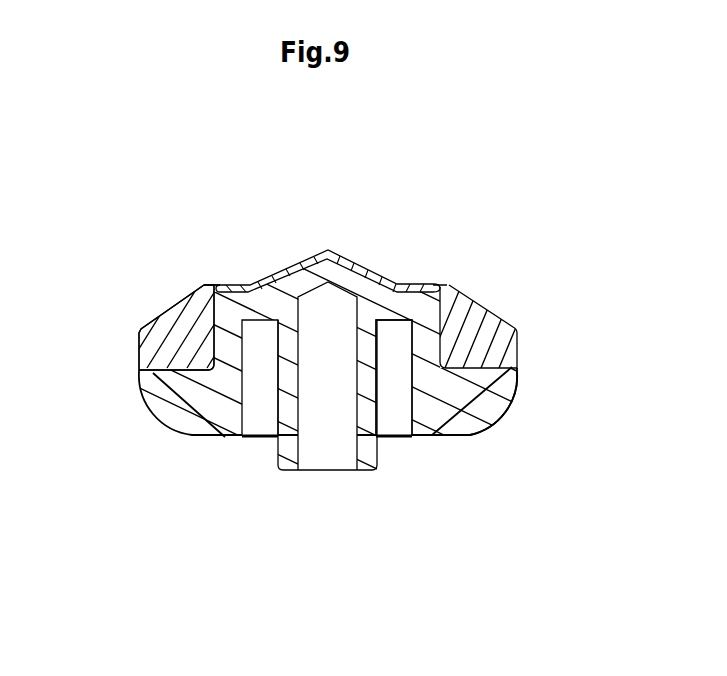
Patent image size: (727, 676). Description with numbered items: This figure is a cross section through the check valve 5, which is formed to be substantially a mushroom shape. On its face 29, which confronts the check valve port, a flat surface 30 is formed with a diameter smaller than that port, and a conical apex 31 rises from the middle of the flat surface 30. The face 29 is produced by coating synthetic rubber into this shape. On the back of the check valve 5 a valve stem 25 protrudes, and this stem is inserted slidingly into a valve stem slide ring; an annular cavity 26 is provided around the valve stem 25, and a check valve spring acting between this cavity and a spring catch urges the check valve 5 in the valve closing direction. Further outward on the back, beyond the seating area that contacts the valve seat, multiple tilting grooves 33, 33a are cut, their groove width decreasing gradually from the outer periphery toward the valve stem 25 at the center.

The check valve 5 is at (387, 232).
The valve stem 25 is at (363, 453).
The annular cavity 26 is at (389, 322).
The face 29 is at (263, 284).
The flat surface 30 is at (237, 284).
The conical apex 31 is at (322, 258).
The tilting groove 33 is at (192, 379).
The tilting groove 33a is at (463, 407).